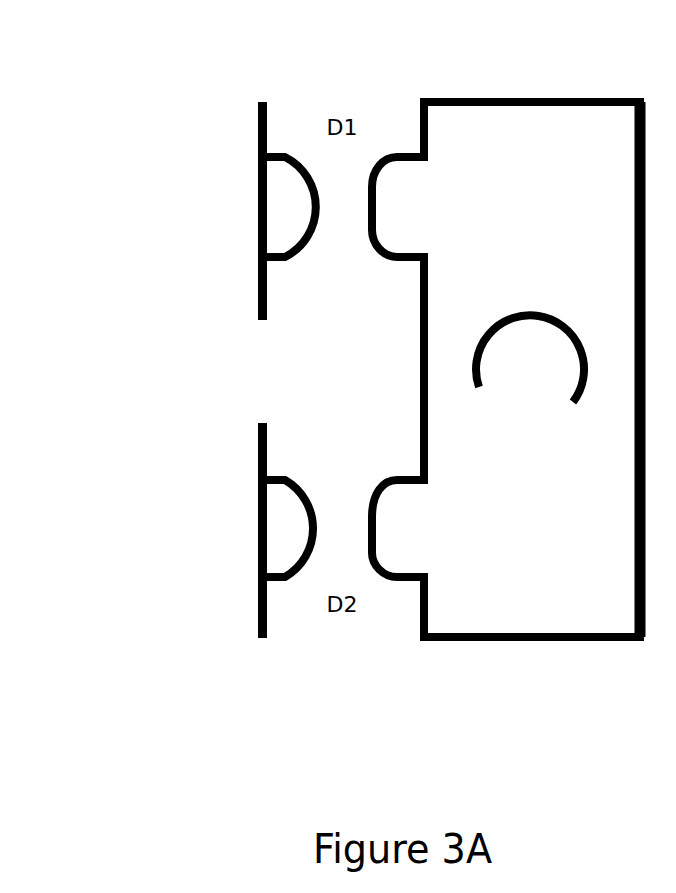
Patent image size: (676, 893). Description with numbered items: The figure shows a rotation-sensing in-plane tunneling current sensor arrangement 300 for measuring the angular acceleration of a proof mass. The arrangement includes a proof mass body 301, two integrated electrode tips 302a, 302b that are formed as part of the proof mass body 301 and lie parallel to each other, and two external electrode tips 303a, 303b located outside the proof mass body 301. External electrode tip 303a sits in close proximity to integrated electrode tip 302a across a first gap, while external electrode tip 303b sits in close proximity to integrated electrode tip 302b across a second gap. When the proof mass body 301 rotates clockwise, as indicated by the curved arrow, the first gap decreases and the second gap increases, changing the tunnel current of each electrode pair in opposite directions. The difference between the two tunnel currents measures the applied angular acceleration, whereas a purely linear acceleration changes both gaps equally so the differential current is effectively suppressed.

The rotation-sensing in-plane tunneling current sensor arrangement 300 is at (150, 76).
The proof mass body 301 is at (525, 369).
The integrated electrode tip 302a is at (393, 257).
The integrated electrode tip 302b is at (388, 482).
The external electrode tip 303a is at (293, 251).
The external electrode tip 303b is at (290, 483).